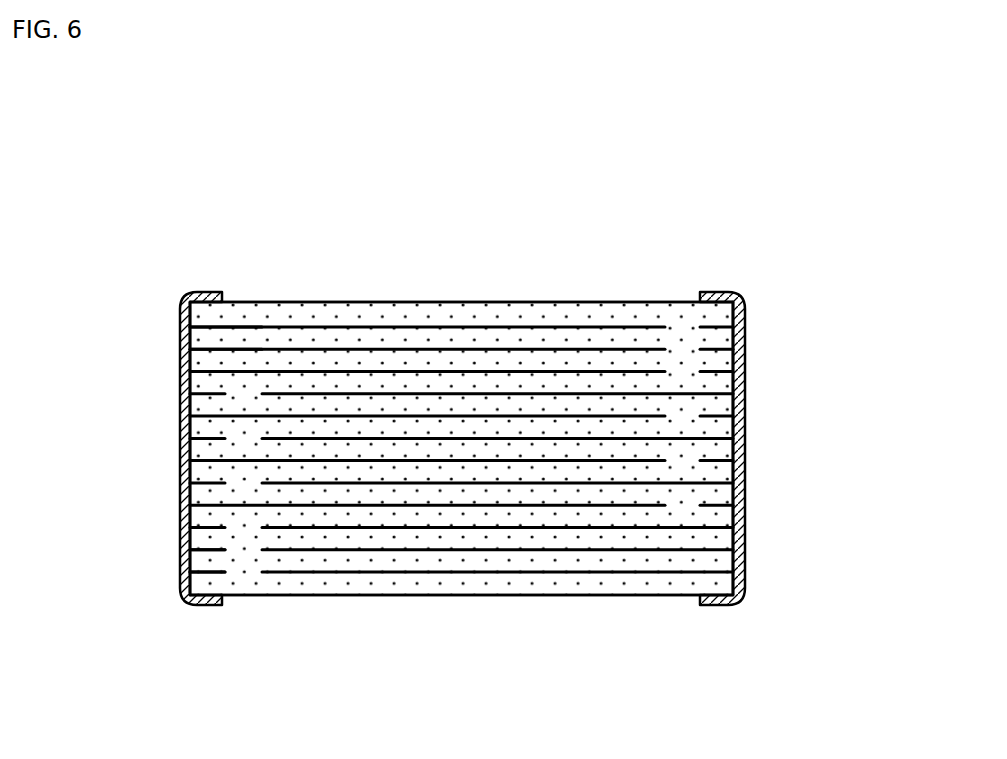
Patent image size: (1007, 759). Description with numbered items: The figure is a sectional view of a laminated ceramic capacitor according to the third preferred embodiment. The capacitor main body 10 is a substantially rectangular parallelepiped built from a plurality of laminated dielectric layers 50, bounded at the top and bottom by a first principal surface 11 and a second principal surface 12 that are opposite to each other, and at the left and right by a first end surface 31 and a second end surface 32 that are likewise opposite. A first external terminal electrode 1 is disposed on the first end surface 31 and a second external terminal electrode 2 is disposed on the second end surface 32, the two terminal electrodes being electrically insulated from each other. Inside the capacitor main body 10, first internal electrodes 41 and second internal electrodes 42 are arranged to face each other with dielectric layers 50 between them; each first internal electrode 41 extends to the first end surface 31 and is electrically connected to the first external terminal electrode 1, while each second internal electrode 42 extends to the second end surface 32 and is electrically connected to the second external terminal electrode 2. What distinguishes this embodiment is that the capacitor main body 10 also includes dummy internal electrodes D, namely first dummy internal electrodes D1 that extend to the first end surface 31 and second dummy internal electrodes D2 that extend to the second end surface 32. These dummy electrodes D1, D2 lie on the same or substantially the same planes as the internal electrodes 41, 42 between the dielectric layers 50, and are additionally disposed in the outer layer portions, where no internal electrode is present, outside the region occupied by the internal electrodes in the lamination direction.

The capacitor main body 10 is at (580, 299).
The first principal surface 11 is at (448, 302).
The second principal surface 12 is at (478, 597).
The first external terminal electrode 1 is at (181, 487).
The second external terminal electrode 2 is at (745, 500).
The first end surface 31 is at (180, 520).
The second end surface 32 is at (745, 540).
The first internal electrode 41 is at (360, 415).
The second internal electrode 42 is at (363, 483).
The dielectric layer 50 is at (553, 430).
The dummy internal electrode D is at (168, 318).
The first dummy internal electrode D1 is at (265, 348).
The second dummy internal electrode D2 is at (705, 348).